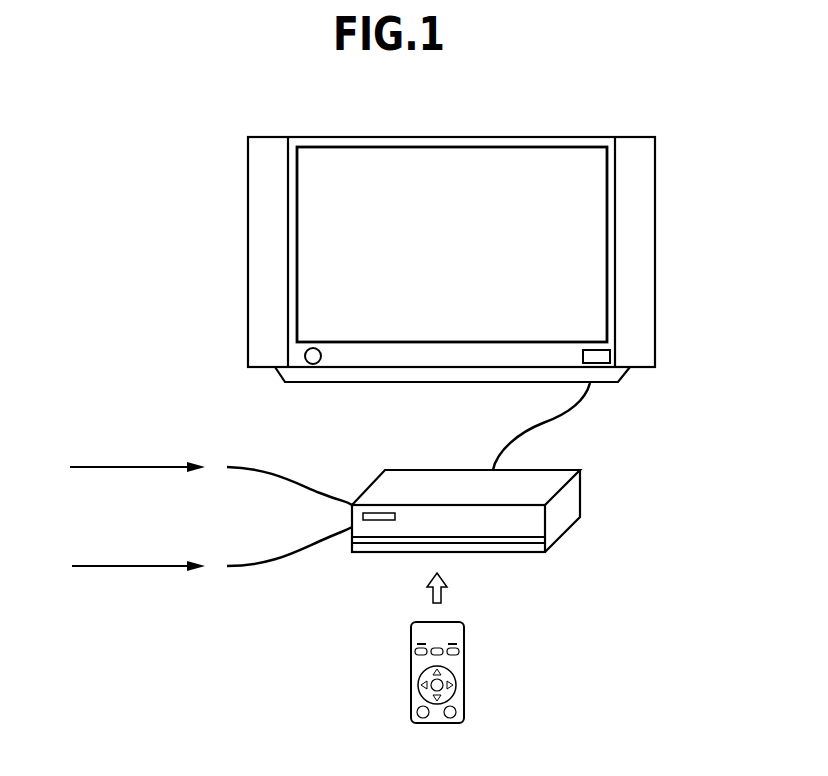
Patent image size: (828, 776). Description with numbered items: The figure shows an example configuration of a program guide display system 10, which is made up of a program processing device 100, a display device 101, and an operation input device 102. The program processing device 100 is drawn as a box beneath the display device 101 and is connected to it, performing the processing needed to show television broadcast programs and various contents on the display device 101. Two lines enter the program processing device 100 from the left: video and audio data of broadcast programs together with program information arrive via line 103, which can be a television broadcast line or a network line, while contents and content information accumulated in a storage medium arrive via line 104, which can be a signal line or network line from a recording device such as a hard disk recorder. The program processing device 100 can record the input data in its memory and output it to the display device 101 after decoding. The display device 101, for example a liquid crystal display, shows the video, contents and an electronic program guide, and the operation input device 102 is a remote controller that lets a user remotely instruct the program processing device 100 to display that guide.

The program guide display system 10 is at (174, 212).
The program processing device 100 is at (583, 490).
The display device 101 is at (655, 255).
The operation input device 102 is at (465, 673).
The line 103 is at (310, 487).
The line 104 is at (295, 551).